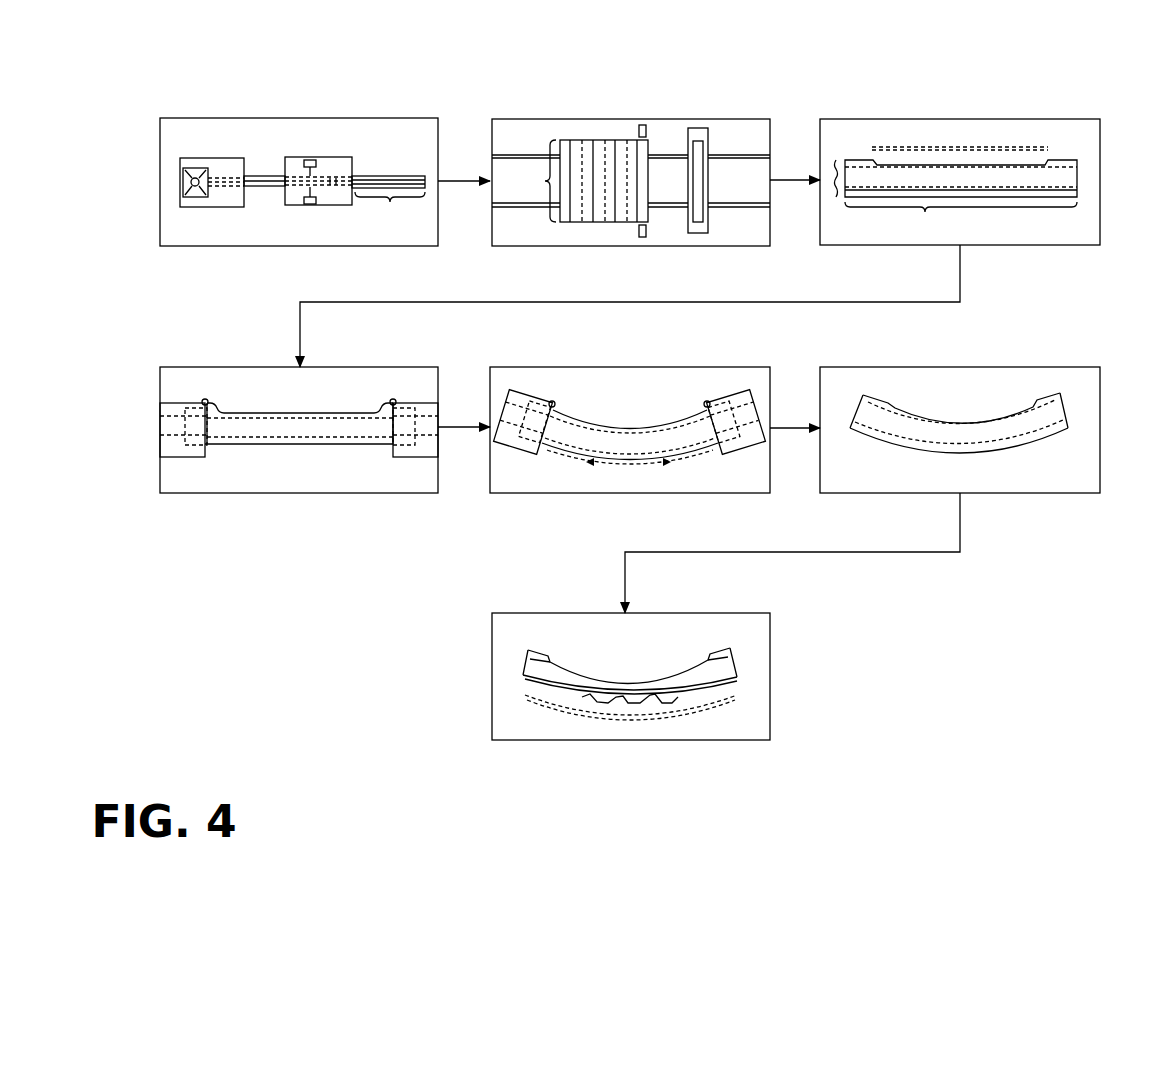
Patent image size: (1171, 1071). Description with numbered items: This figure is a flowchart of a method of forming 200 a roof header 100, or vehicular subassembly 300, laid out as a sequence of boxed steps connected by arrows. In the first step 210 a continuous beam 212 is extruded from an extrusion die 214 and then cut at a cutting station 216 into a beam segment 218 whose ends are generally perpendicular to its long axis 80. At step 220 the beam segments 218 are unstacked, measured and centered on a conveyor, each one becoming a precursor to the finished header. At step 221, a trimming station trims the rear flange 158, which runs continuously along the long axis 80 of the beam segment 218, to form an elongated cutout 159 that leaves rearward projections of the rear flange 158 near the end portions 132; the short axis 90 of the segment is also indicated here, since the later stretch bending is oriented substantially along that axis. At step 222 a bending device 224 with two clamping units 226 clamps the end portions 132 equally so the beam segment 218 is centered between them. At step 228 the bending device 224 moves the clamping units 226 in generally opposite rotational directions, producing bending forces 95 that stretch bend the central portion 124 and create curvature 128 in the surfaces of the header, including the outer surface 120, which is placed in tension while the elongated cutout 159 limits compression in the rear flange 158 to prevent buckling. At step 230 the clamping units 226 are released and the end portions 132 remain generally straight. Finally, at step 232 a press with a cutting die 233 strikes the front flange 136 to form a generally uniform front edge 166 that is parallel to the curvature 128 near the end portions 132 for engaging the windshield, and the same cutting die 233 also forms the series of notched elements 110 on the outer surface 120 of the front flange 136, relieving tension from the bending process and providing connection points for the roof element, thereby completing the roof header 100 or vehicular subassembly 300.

The method of forming 200 is at (215, 45).
The extrusion step 210 is at (330, 118).
The continuous beam 212 is at (265, 176).
The extrusion die 214 is at (212, 158).
The cutting station 216 is at (297, 205).
The beam segment 218 is at (390, 175).
The long axis 80 is at (716, 190).
The unstacking and centering step 220 is at (660, 119).
The trimming step 221 is at (1008, 119).
The short axis 90 is at (836, 178).
The rear flange 158 is at (948, 165).
The elongated cutout 159 is at (980, 165).
The roof header 100 is at (842, 457).
The vehicular subassembly 300 is at (1067, 212).
The clamping step 222 is at (330, 367).
The bending device 224 is at (190, 463).
The clamping unit 226 is at (177, 403).
The end portion 132 is at (200, 437).
The bending step 228 is at (652, 367).
The curvature 128 is at (568, 455).
The bending forces 95 is at (500, 450).
The outer surface 120 is at (613, 460).
The central portion 124 is at (632, 475).
The release step 230 is at (993, 367).
The die cutting step 232 is at (675, 613).
The front flange 136 is at (560, 685).
The notched elements 110 is at (620, 702).
The front edge 166 is at (660, 700).
The cutting die 233 is at (717, 703).